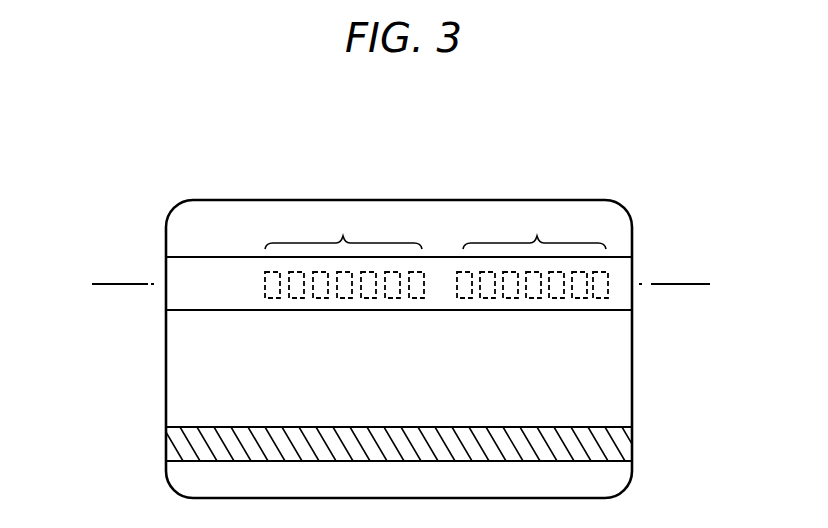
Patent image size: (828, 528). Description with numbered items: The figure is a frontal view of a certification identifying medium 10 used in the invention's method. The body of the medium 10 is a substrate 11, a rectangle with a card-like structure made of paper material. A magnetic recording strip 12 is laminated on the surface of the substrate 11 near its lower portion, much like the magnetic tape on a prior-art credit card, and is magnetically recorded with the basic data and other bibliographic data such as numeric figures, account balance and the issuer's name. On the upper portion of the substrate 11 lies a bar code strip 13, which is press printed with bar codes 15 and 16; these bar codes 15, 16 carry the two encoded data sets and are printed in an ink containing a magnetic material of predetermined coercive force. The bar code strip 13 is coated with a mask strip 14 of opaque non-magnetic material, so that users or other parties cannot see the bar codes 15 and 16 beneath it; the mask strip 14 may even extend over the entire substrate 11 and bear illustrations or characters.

The certification identifying medium 10 is at (417, 190).
The substrate 11 is at (197, 374).
The magnetic recording strip 12 is at (593, 425).
The bar code strip 13 is at (635, 268).
The mask strip 14 is at (191, 283).
The bar code 15 is at (343, 236).
The bar code 16 is at (537, 236).